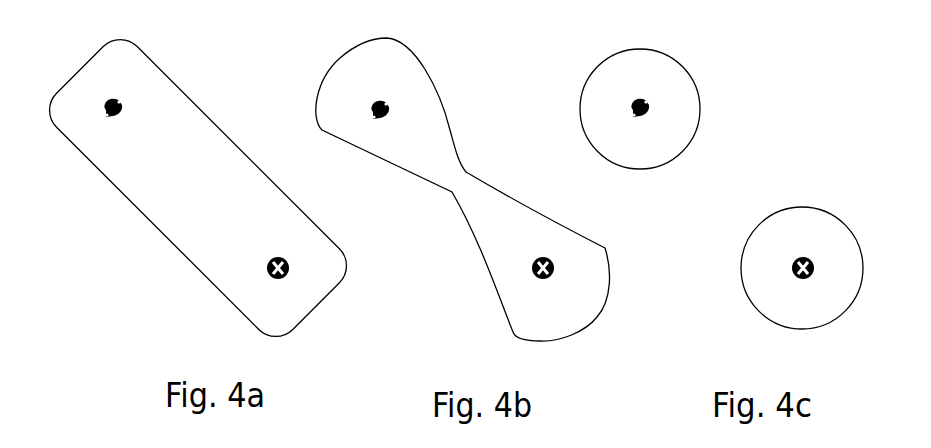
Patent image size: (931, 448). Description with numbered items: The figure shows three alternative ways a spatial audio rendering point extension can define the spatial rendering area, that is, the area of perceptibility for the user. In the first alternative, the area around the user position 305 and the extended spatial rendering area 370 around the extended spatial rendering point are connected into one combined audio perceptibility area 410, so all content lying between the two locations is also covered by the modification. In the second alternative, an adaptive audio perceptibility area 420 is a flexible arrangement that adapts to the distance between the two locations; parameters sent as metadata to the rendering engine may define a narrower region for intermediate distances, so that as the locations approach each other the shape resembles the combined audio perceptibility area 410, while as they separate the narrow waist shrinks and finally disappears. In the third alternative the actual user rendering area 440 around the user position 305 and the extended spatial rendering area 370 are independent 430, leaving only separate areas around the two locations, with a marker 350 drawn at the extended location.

In FIG. 4a, the user position 305 is at (97, 125).
In FIG. 4b, the user position 305 is at (352, 102).
In FIG. 4c, the user position 305 is at (667, 102).
In FIG. 4a, the destination / target location marker 350 is at (297, 263).
In FIG. 4b, the destination / target location marker 350 is at (577, 268).
In FIG. 4c, the destination / target location marker 350 is at (810, 257).
In FIG. 4c, the extended spatial rendering area 370 is at (803, 212).
In FIG. 4a, the combined audio perceptibility area 410 is at (160, 240).
In FIG. 4b, the adaptive audio perceptibility area 420 is at (450, 130).
In FIG. 4c, the independent areas 430 is at (762, 222).
In FIG. 4c, the actual user rendering area 440 is at (657, 52).